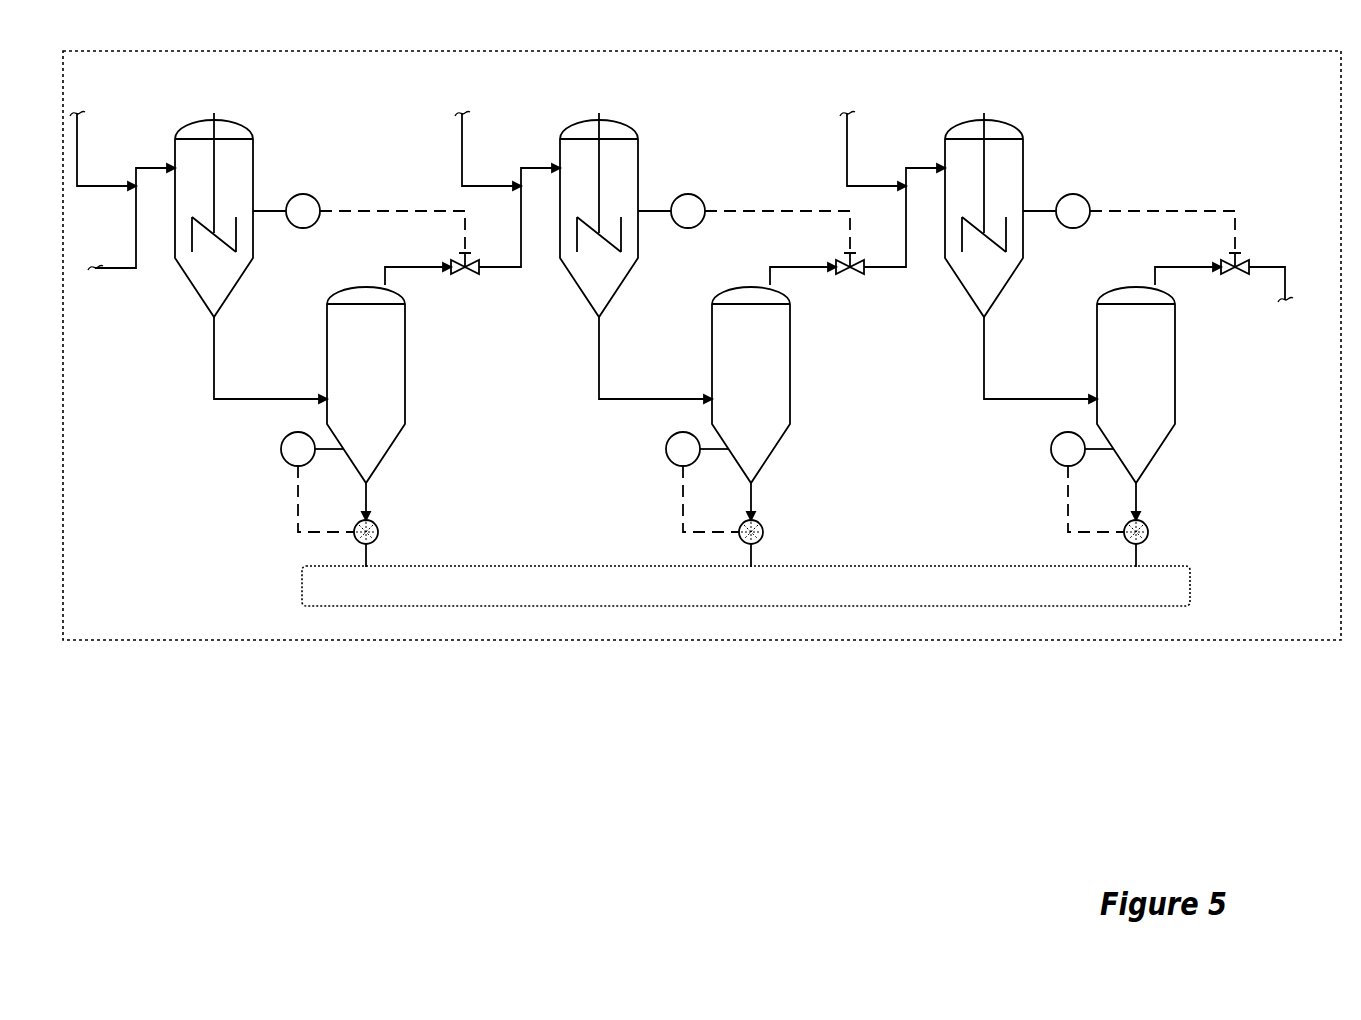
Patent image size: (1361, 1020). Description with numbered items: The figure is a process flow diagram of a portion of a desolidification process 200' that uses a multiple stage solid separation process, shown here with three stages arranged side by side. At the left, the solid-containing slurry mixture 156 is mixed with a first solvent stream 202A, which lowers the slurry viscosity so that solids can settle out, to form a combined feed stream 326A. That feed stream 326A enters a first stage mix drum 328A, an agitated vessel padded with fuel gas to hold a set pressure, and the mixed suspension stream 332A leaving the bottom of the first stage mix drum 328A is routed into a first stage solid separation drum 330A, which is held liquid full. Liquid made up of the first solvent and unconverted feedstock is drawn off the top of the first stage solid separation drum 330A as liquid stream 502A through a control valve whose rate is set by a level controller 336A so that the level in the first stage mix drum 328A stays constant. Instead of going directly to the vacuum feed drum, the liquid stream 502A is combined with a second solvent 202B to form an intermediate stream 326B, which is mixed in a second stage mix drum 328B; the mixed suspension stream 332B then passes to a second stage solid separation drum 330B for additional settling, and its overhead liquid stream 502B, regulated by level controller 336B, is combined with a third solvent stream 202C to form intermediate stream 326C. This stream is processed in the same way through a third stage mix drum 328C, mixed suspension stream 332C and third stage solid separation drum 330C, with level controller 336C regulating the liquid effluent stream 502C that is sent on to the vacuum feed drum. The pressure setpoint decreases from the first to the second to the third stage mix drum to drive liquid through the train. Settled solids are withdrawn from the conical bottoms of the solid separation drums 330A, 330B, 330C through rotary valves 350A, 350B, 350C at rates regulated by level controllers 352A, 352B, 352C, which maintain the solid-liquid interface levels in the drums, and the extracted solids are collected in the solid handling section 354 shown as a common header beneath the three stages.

The desolidification process 200' is at (702, 321).
The first solvent stream 202A is at (104, 102).
The second solvent 202B is at (489, 102).
The third solvent stream 202C is at (874, 102).
The solid-containing slurry mixture 156 is at (113, 270).
The feed stream 326A is at (165, 166).
The intermediate stream 326B is at (550, 166).
The intermediate stream 326C is at (935, 166).
The first stage mix drum 328A is at (290, 158).
The second stage mix drum 328B is at (675, 158).
The third stage mix drum 328C is at (1060, 158).
The level controller 336A is at (308, 194).
The level controller 336B is at (693, 194).
The level controller 336C is at (1078, 194).
The liquid stream 502A is at (493, 270).
The liquid stream 502B is at (878, 270).
The liquid effluent stream 502C is at (1262, 265).
The first stage solid separation drum 330A is at (405, 340).
The second stage solid separation drum 330B is at (790, 340).
The third stage solid separation drum 330C is at (1175, 340).
The mixed suspension stream 332A is at (242, 399).
The mixed suspension stream 332B is at (627, 399).
The mixed suspension stream 332C is at (1012, 399).
The level controller 352A is at (281, 450).
The level controller 352B is at (666, 450).
The level controller 352C is at (1051, 450).
The rotary valve 350A is at (378, 531).
The rotary valve 350B is at (763, 531).
The rotary valve 350C is at (1148, 531).
The solid handling section 354 is at (1190, 583).